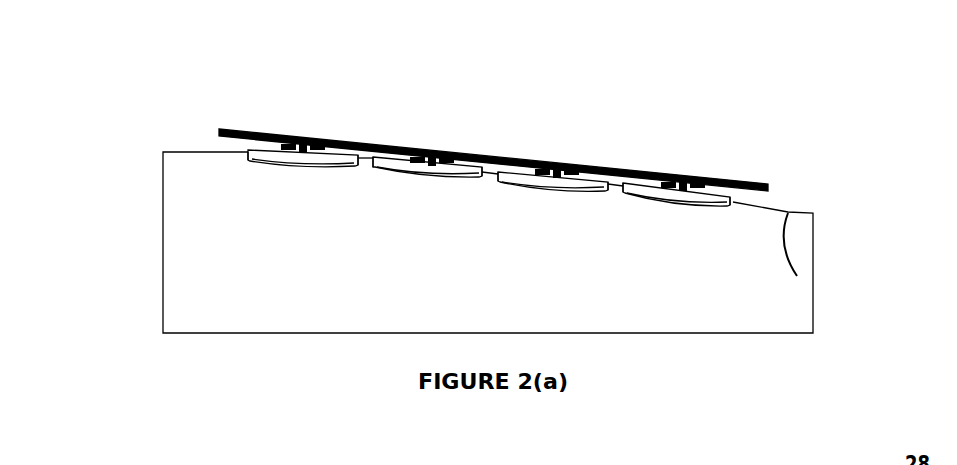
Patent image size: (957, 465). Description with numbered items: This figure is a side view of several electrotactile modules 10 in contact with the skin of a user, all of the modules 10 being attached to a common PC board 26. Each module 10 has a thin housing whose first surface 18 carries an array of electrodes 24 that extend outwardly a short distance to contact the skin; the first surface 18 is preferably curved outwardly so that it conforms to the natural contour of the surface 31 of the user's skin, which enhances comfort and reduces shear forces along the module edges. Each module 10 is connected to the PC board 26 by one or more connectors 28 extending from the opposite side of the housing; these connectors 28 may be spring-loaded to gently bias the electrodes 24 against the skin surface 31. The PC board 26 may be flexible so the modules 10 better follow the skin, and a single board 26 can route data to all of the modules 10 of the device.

The electrotactile module 10 is at (665, 213).
The first surface 18 is at (307, 176).
The electrodes 24 is at (728, 245).
The PC board 26 is at (239, 131).
The connectors 28 is at (311, 139).
The surface of the user's skin 31 is at (797, 276).